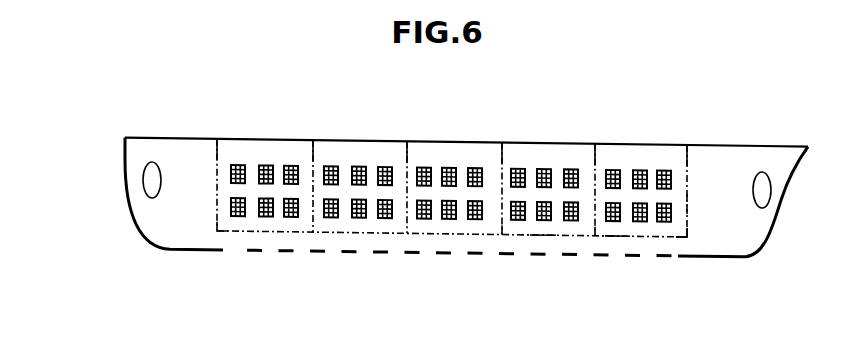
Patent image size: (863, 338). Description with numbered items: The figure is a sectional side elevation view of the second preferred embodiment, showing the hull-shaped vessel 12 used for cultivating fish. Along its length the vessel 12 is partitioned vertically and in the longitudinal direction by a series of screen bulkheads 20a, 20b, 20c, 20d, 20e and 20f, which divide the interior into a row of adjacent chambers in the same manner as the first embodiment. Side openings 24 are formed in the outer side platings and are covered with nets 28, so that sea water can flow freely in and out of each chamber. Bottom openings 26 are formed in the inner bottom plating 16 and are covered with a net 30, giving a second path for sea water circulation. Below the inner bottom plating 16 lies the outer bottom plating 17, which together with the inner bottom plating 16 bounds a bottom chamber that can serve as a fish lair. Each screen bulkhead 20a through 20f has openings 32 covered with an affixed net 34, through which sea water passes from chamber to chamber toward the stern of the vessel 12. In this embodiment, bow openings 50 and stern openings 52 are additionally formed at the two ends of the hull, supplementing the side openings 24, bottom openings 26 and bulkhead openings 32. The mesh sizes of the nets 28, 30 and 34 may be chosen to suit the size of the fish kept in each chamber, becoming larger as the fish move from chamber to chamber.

The hull-shaped vessel 12 is at (755, 136).
The bow openings 50 is at (771, 175).
The stern openings 52 is at (146, 192).
The screen bulkhead 20a is at (688, 148).
The screen bulkhead 20b is at (596, 148).
The screen bulkhead 20c is at (503, 148).
The screen bulkhead 20d is at (408, 149).
The screen bulkhead 20e is at (314, 148).
The screen bulkhead 20f is at (218, 149).
The side openings 24 is at (266, 213).
The nets 28 is at (291, 213).
The inner bottom plating 16 is at (408, 229).
The outer bottom plating 17 is at (405, 248).
The net 30 is at (543, 229).
The bottom openings 26 is at (617, 229).
The net 34 is at (688, 198).
The openings 32 is at (688, 204).